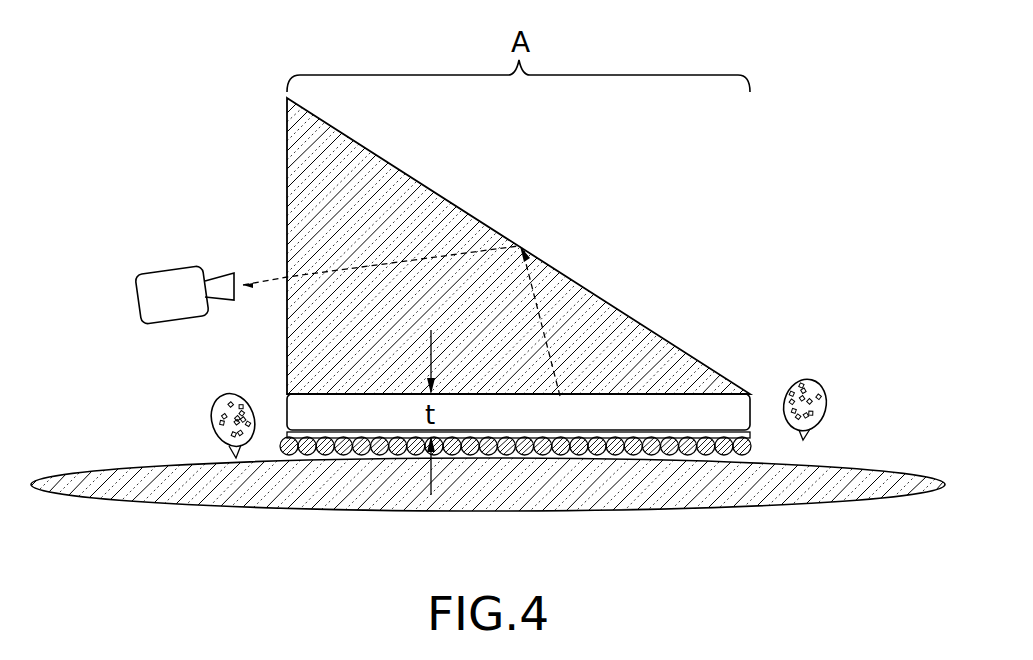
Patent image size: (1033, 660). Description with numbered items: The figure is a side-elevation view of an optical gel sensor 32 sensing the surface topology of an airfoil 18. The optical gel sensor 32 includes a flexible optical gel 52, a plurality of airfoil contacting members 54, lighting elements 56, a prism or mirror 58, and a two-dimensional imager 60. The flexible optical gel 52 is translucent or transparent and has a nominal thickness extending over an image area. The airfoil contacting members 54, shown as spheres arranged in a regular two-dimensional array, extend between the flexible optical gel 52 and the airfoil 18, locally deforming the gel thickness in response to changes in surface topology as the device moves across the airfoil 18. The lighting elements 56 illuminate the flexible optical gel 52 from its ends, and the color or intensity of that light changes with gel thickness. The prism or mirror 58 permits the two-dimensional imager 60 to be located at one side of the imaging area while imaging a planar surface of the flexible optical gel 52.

The airfoil 18 is at (275, 500).
The optical gel sensor 32 is at (555, 333).
The flexible optical gel 52 is at (752, 405).
The airfoil contacting members 54 is at (548, 443).
The lighting elements 56 is at (210, 420).
The prism or mirror 58 is at (428, 186).
The two-dimensional imager 60 is at (174, 290).